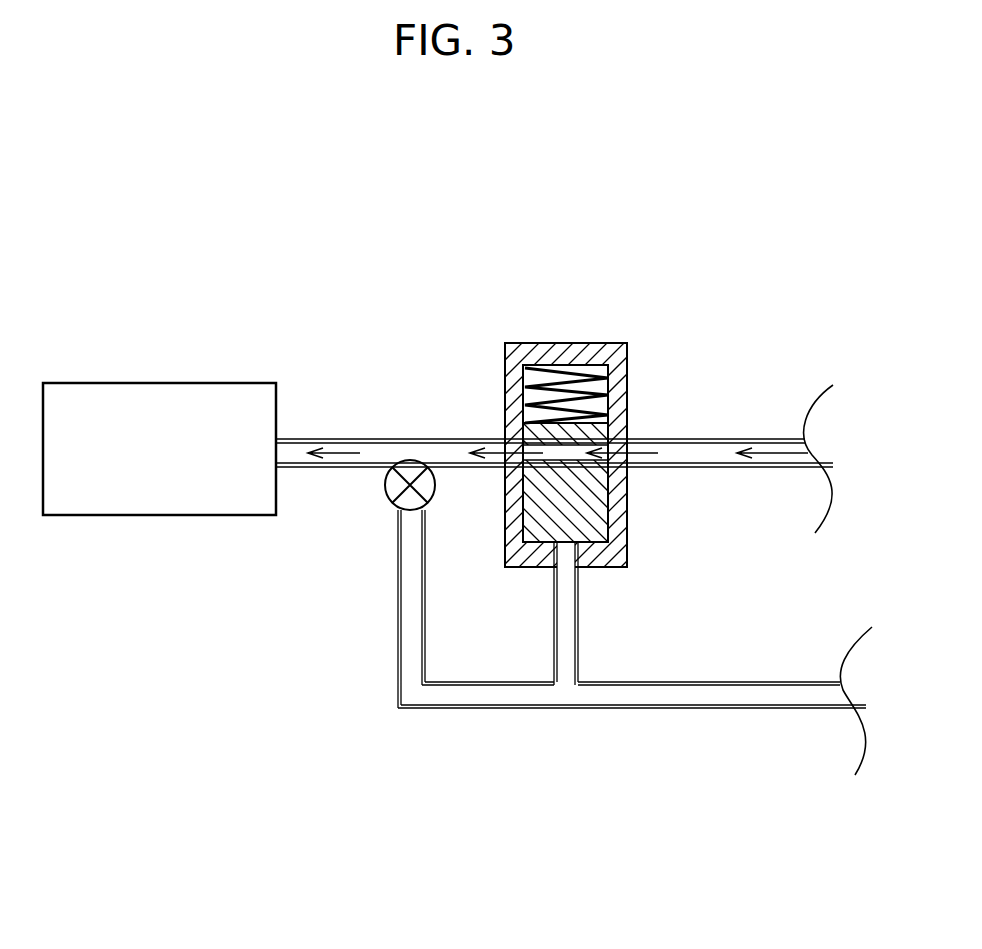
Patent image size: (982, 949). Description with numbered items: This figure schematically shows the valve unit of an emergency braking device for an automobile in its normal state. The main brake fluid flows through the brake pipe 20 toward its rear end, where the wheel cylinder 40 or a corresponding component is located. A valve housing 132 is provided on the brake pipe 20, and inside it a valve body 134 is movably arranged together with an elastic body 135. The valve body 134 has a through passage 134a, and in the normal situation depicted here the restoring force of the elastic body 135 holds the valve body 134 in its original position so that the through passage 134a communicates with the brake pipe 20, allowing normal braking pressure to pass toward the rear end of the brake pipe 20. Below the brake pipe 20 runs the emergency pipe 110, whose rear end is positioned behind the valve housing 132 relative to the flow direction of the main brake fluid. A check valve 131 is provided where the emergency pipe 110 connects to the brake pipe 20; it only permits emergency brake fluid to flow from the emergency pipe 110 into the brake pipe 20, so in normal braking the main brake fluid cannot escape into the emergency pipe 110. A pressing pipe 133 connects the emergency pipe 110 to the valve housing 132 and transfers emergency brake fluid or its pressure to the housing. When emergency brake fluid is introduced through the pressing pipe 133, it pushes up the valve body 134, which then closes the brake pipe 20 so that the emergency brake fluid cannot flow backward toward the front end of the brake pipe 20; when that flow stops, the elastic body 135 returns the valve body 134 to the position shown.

The brake pipe 20 is at (716, 440).
The wheel cylinder 40 is at (140, 494).
The emergency pipe 110 is at (748, 710).
The check valve 131 is at (388, 495).
The valve housing 132 is at (505, 362).
The pressing pipe 133 is at (578, 625).
The valve body 134 is at (577, 502).
The through passage 134a is at (567, 450).
The elastic body 135 is at (551, 372).